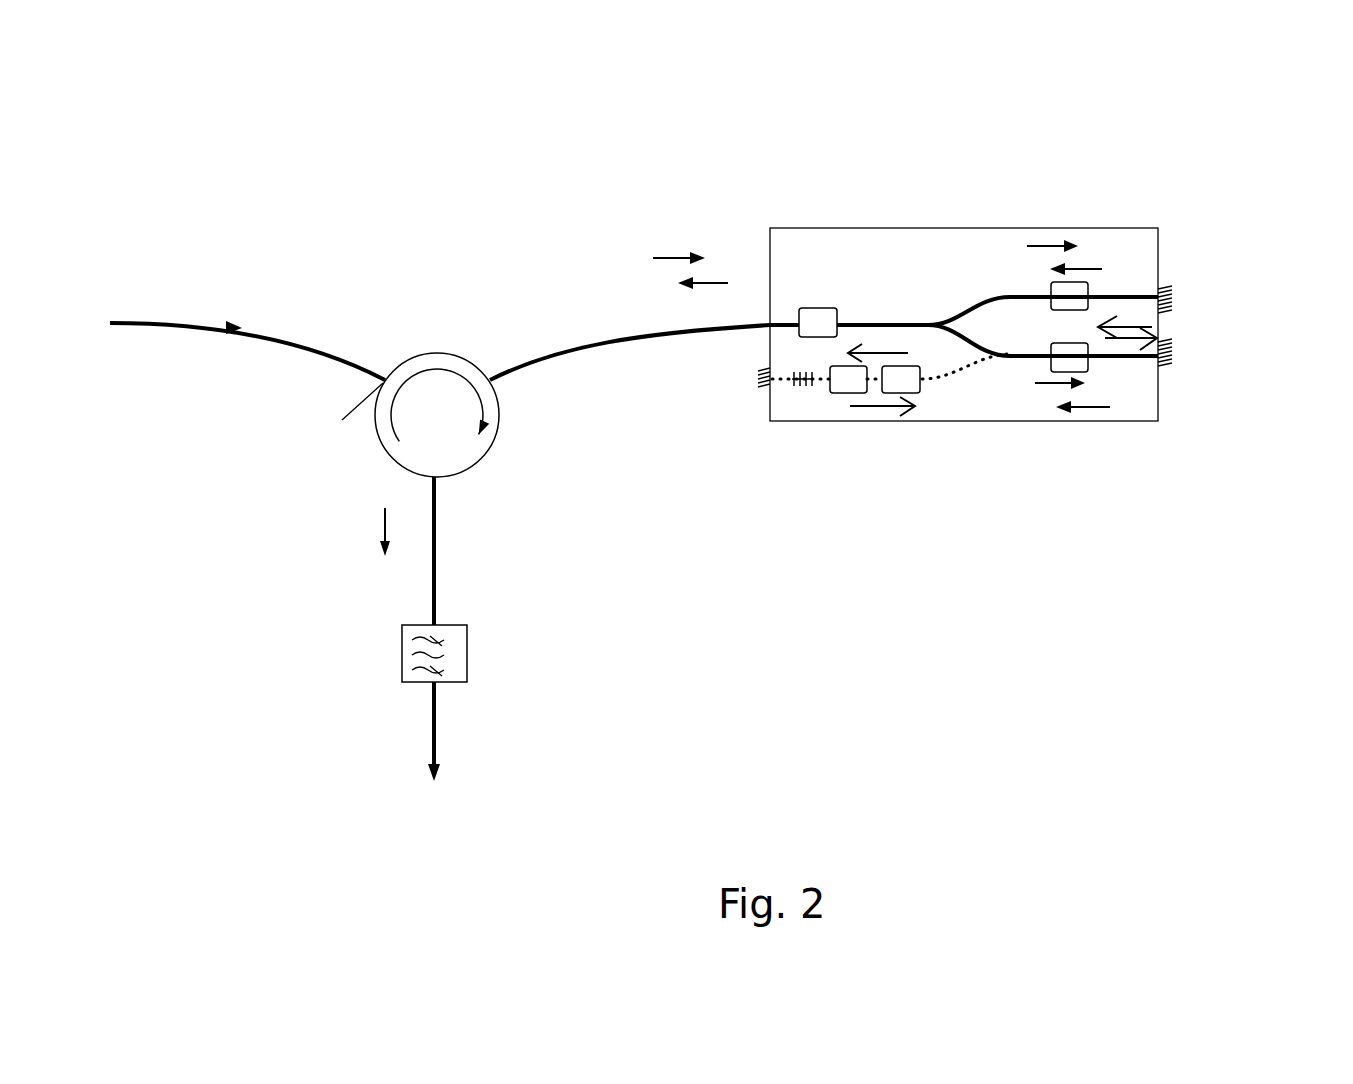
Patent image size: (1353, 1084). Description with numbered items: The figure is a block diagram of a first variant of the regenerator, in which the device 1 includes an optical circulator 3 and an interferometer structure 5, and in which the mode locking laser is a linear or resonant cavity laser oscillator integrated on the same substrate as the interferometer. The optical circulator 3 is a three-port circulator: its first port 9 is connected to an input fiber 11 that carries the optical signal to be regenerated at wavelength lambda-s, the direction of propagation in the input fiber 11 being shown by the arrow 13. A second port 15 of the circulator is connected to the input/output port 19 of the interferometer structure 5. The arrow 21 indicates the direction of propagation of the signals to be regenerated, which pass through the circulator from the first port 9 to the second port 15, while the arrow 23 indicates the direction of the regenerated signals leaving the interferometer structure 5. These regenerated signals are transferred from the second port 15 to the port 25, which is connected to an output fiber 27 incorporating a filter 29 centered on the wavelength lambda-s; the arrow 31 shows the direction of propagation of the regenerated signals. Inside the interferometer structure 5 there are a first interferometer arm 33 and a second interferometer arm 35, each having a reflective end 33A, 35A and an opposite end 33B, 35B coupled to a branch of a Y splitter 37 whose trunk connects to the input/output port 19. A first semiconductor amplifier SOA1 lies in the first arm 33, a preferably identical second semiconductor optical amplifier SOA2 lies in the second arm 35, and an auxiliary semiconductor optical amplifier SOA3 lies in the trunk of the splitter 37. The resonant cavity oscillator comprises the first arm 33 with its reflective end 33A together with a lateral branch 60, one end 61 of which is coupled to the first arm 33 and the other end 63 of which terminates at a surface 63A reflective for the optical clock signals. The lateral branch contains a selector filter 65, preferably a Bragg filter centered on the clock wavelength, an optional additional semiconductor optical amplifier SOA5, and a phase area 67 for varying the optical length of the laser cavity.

The device 1 is at (410, 223).
The optical circulator 3 is at (456, 355).
The interferometer structure 5 is at (963, 155).
The first port 9 is at (354, 424).
The input fiber 11 is at (324, 347).
The arrow 13 is at (210, 330).
The second port 15 is at (490, 383).
The input/output port 19 is at (768, 326).
The arrow 21 is at (677, 256).
The arrow 23 is at (707, 280).
The port 25 is at (440, 480).
The output fiber 27 is at (437, 718).
The filter 29 is at (467, 632).
The arrow 31 is at (383, 517).
The first interferometer arm 33 is at (1107, 357).
The reflective end 33A is at (1172, 353).
The end 33B is at (967, 337).
The second interferometer arm 35 is at (1112, 296).
The reflective end 35A is at (1172, 298).
The end 35B is at (965, 305).
The Y splitter 37 is at (871, 323).
The lateral branch 60 is at (970, 394).
The end 61 is at (992, 358).
The other end 63 is at (778, 386).
The surface 63A is at (760, 390).
The selector filter 65 is at (802, 387).
The phase area 67 is at (898, 394).
The first semiconductor amplifier SOA1 is at (1062, 365).
The second semiconductor optical amplifier SOA2 is at (1063, 288).
The auxiliary semiconductor optical amplifier SOA3 is at (815, 308).
The additional semiconductor optical amplifier SOA5 is at (845, 394).